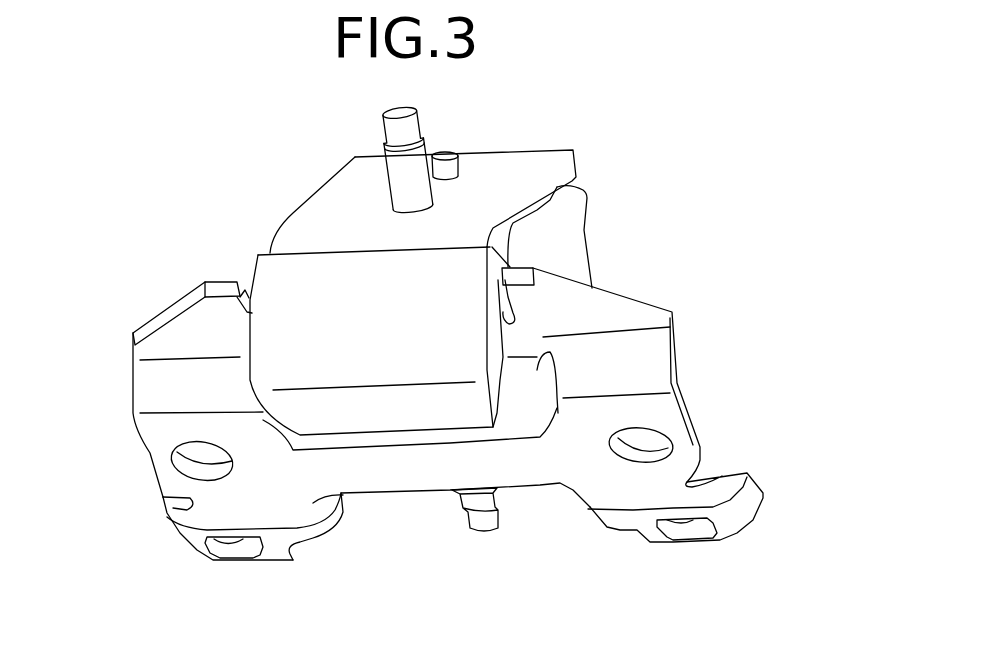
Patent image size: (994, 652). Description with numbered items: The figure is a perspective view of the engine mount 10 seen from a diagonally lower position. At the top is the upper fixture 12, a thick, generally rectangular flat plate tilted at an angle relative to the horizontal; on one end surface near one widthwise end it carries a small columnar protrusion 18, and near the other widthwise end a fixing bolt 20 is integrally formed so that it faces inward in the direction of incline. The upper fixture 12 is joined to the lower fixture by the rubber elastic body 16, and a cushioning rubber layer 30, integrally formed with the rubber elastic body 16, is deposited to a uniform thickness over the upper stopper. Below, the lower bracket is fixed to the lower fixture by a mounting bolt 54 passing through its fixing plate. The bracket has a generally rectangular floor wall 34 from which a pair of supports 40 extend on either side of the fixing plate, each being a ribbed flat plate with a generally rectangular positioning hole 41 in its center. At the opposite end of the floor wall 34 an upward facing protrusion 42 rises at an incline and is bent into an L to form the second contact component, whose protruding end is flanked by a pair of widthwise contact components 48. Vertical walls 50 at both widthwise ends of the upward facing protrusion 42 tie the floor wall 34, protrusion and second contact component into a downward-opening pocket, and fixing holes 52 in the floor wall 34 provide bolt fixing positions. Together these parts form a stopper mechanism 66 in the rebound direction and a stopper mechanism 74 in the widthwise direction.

The engine mount 10 is at (632, 111).
The upper fixture 12 is at (502, 177).
The rubber elastic body 16 is at (560, 244).
The protrusion 18 is at (442, 160).
The fixing bolt 20 is at (407, 177).
The cushioning rubber layer 30 is at (378, 367).
The floor wall 34 is at (566, 460).
The support 40 is at (737, 513).
The positioning hole 41 is at (233, 538).
The upward facing protrusion 42 is at (522, 398).
The widthwise contact component 48 is at (248, 297).
The vertical wall 50 is at (545, 356).
The fixing hole 52 is at (210, 470).
The mounting bolt 54 is at (468, 523).
The stopper mechanism in the rebound direction 66 is at (523, 340).
The stopper mechanism in the widthwise direction 74 is at (243, 257).